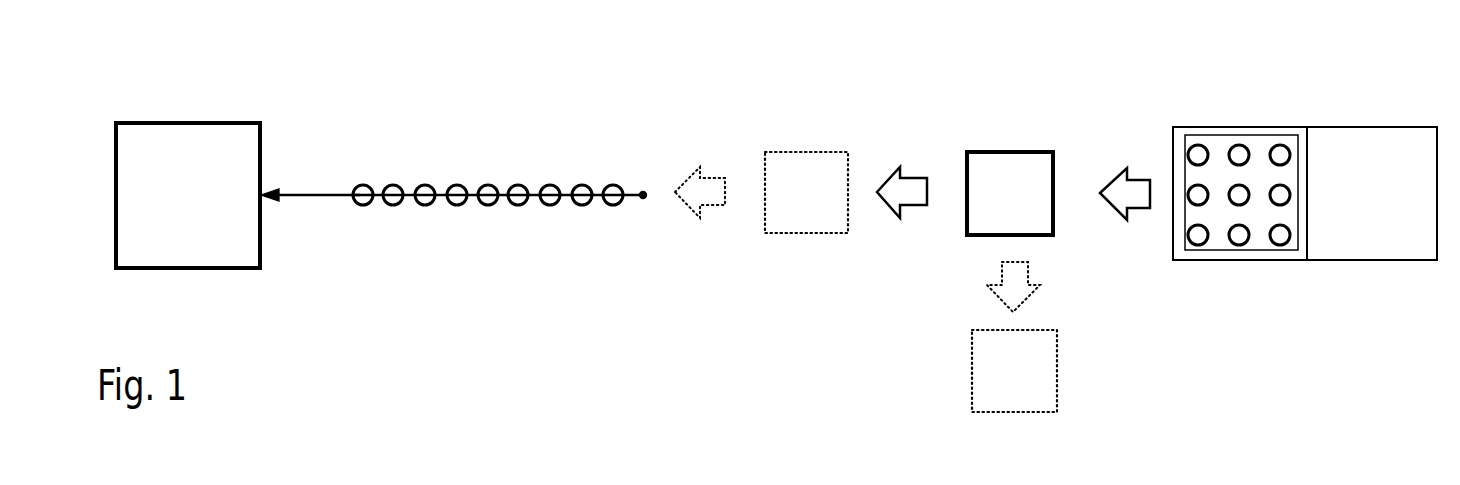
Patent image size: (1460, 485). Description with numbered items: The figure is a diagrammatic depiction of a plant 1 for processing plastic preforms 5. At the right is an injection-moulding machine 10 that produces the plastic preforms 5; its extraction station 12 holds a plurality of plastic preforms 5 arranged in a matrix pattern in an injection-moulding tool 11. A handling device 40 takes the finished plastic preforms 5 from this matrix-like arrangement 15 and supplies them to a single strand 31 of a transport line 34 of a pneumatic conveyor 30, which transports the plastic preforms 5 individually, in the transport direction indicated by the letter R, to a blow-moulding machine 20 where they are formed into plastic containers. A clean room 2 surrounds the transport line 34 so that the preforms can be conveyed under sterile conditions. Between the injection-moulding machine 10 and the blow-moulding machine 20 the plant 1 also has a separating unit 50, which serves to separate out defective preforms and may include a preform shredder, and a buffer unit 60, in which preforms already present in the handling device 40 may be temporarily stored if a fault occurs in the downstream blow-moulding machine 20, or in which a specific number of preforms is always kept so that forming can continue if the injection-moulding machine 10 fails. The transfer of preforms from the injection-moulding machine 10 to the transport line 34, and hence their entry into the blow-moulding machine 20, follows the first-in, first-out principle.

The plant 1 is at (1181, 365).
The clean room 2 is at (505, 155).
The plastic preform 5 is at (519, 202).
The injection-moulding machine 10 is at (1360, 100).
The injection-moulding tool 11 is at (1214, 148).
The extraction station 12 is at (1180, 146).
The matrix-like arrangement 15 is at (1183, 215).
The blow-moulding machine 20 is at (190, 250).
The pneumatic conveyor 30 is at (379, 155).
The single strand 31 is at (634, 185).
The transport line 34 is at (318, 200).
The handling device 40 is at (993, 167).
The separating unit 50 is at (1017, 395).
The buffer unit 60 is at (795, 165).